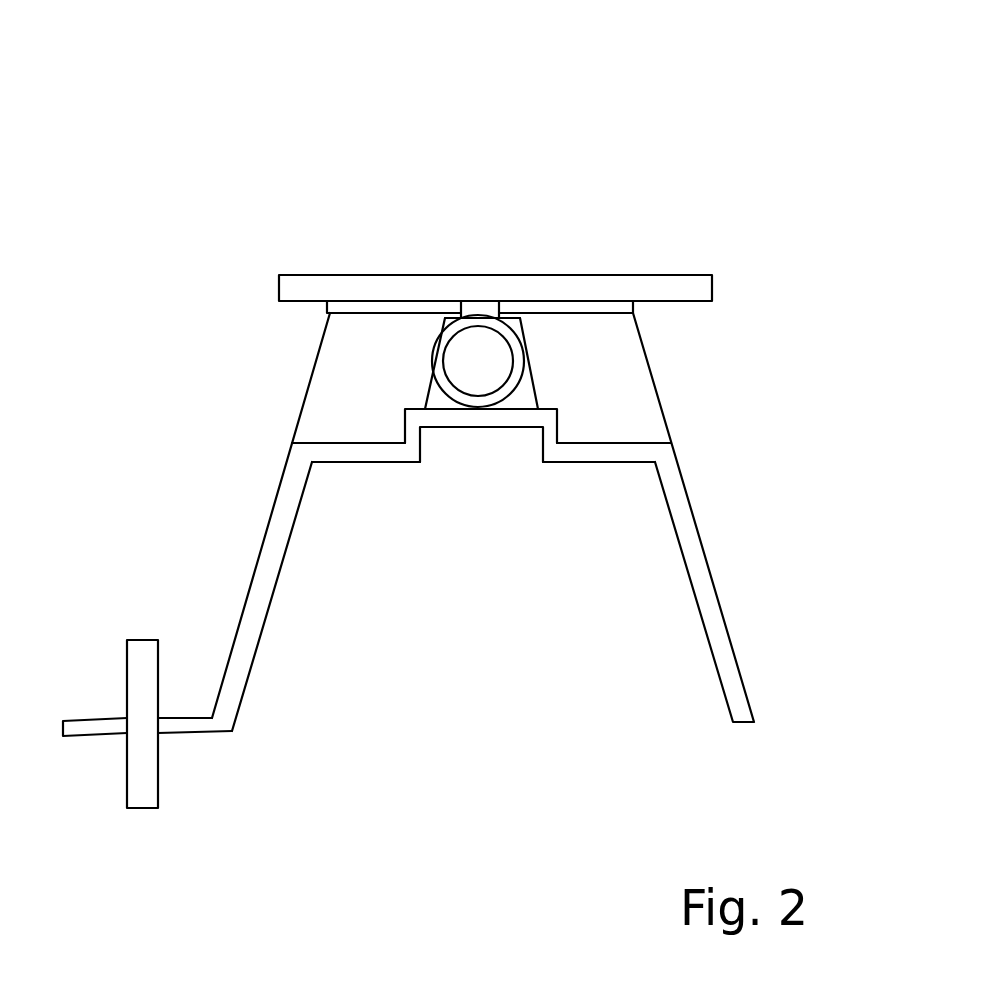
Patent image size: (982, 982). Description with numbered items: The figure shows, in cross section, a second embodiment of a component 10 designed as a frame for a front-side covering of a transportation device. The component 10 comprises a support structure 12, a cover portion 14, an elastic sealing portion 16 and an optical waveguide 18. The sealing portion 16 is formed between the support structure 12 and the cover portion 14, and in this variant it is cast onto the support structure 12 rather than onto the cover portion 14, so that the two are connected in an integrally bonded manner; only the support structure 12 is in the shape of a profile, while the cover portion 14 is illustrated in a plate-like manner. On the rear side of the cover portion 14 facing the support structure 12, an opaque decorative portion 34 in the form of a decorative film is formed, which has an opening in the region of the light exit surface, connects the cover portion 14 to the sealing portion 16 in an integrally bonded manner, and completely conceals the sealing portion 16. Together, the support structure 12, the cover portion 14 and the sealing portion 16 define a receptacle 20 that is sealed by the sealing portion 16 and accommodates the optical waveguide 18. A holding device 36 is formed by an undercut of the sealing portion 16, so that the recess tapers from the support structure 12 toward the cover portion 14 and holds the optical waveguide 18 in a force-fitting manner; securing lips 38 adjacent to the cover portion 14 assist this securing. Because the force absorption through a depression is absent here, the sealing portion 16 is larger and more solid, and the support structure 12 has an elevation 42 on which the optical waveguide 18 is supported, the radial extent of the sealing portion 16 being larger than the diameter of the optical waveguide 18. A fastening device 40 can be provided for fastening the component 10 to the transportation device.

The component 10 is at (685, 116).
The support structure 12 is at (380, 450).
The cover portion 14 is at (347, 288).
The elastic sealing portion 16 is at (557, 365).
The optical waveguide 18 is at (473, 345).
The receptacle 20 is at (523, 398).
The opaque decorative portion 34 is at (612, 312).
The holding device 36 is at (377, 378).
The securing lips 38 is at (447, 317).
The fastening device 40 is at (143, 782).
The elevation 42 is at (467, 425).